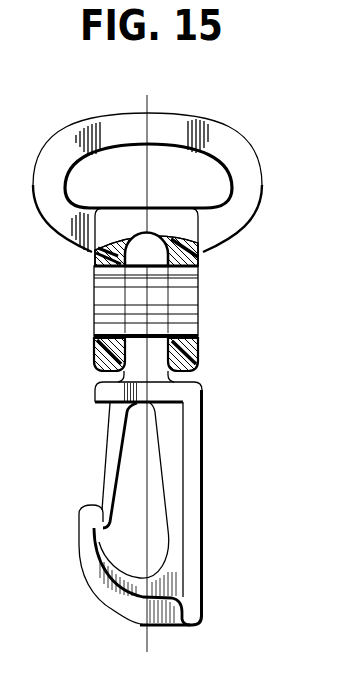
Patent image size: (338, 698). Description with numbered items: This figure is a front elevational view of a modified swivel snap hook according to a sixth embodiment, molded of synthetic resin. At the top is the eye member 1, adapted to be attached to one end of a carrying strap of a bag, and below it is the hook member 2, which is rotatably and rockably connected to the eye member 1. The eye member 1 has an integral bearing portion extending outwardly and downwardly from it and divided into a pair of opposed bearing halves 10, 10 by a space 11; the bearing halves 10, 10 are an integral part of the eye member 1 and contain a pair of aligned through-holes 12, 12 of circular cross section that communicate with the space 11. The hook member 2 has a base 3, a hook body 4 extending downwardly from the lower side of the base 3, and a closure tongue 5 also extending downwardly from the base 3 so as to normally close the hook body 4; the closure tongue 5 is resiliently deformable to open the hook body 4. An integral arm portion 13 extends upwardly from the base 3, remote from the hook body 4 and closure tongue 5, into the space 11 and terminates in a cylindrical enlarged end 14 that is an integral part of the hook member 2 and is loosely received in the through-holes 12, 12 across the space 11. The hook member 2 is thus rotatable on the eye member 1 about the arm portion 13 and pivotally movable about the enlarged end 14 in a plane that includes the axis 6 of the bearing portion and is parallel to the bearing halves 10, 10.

The eye member 1 is at (257, 139).
The hook member 2 is at (208, 487).
The base 3 is at (105, 397).
The hook body 4 is at (120, 607).
The closure tongue 5 is at (105, 482).
The axis of the bearing portion 6 is at (149, 202).
The bearing halves 10 is at (98, 362).
The space 11 is at (143, 241).
The through-holes 12 is at (105, 330).
The arm portion 13 is at (160, 373).
The cylindrical enlarged end 14 is at (100, 298).